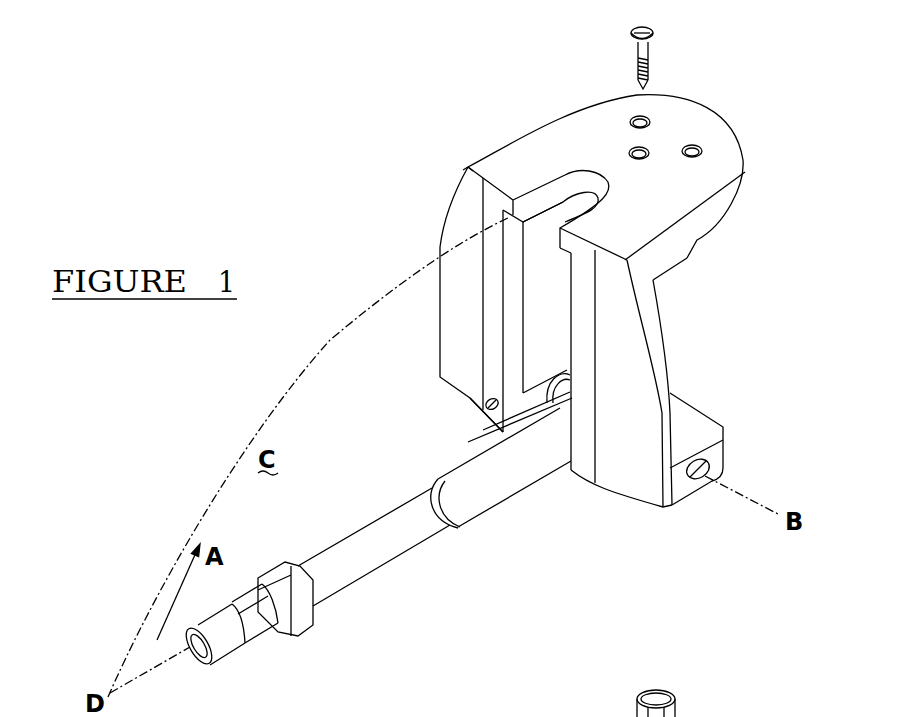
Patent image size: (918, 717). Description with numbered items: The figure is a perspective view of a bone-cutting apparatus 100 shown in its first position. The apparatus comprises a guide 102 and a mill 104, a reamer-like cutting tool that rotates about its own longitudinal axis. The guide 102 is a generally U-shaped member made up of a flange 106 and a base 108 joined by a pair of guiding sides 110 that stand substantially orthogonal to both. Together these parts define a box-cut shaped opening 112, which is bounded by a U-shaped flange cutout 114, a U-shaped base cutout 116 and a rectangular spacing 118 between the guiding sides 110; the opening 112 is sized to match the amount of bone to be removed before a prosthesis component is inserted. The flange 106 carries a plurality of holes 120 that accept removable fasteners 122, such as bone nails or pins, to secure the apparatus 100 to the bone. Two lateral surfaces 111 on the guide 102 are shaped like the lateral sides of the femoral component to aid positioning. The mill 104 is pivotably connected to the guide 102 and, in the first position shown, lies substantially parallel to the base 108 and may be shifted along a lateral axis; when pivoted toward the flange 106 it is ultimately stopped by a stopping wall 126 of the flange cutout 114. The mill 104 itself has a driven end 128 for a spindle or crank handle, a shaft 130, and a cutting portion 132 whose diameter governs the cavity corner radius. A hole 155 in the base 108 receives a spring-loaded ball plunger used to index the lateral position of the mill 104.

The bone-cutting apparatus 100 is at (328, 219).
The guide 102 is at (495, 145).
The mill 104 is at (378, 586).
The flange 106 is at (683, 197).
The base 108 is at (697, 433).
The guiding sides 110 is at (455, 299).
The lateral surfaces 111 is at (438, 211).
The box-cut shaped opening 112 is at (531, 252).
The flange cutout 114 is at (466, 167).
The base cutout 116 is at (508, 430).
The rectangular spacing 118 is at (553, 267).
The holes 120 is at (647, 147).
The removable fasteners 122 is at (652, 38).
The stopping wall 126 is at (563, 202).
The driven end 128 is at (226, 657).
The shaft 130 is at (392, 527).
The cutting portion 132 is at (517, 470).
The hole 155 is at (487, 402).